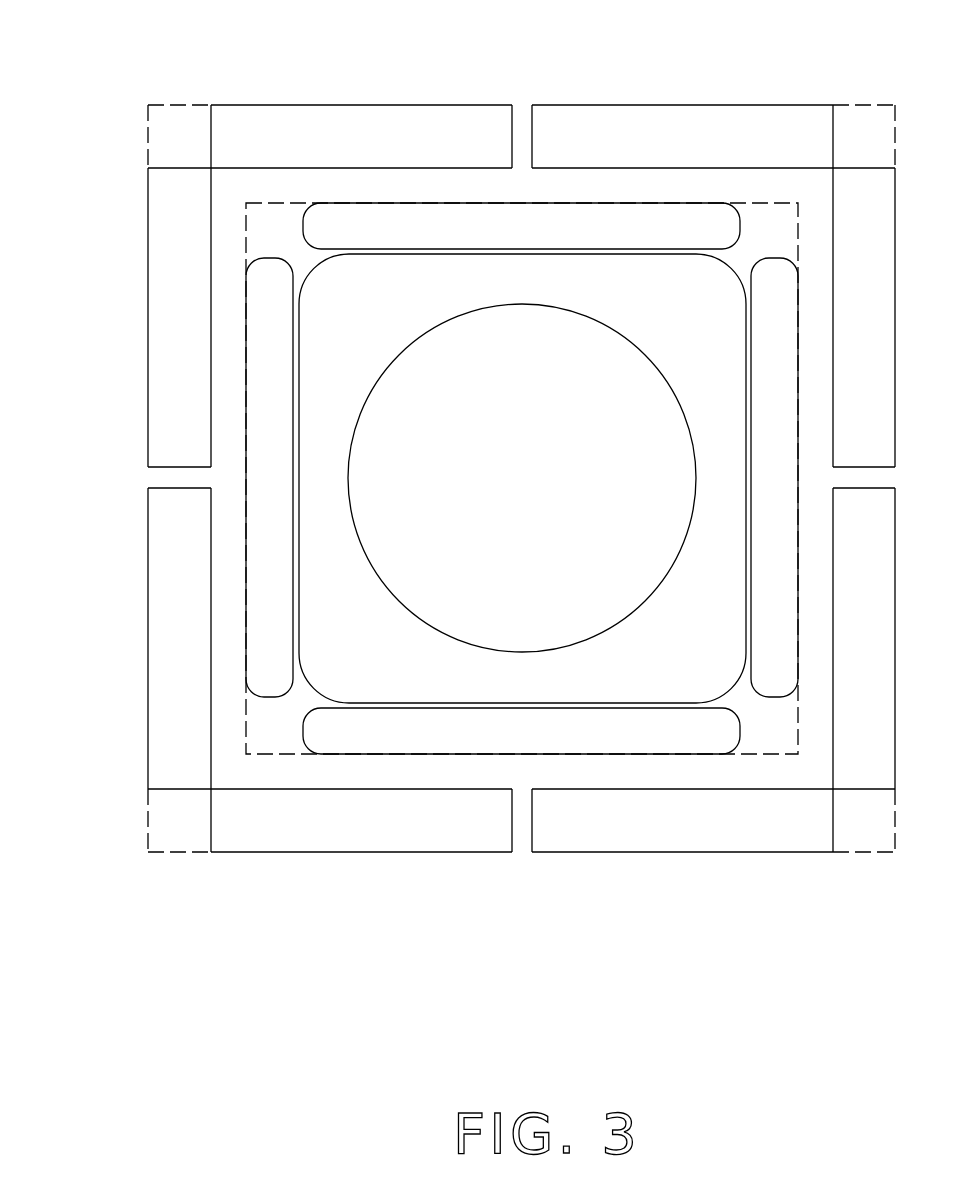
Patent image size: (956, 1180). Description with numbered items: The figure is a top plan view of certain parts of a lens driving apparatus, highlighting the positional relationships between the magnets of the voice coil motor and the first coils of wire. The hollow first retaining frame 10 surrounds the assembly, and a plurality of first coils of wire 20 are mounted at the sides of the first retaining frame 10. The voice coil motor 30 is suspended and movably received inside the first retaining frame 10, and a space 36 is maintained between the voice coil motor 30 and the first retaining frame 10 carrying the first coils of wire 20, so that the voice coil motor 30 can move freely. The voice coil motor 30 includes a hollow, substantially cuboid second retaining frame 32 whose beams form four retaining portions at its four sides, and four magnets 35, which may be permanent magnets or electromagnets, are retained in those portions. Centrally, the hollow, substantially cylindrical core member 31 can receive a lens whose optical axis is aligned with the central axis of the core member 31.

The first retaining frame 10 is at (178, 823).
The first coils of wire 20 is at (172, 705).
The voice coil motor 30 is at (645, 197).
The core member 31 is at (445, 672).
The second retaining frame 32 is at (283, 720).
The magnets 35 is at (270, 298).
The space 36 is at (232, 479).